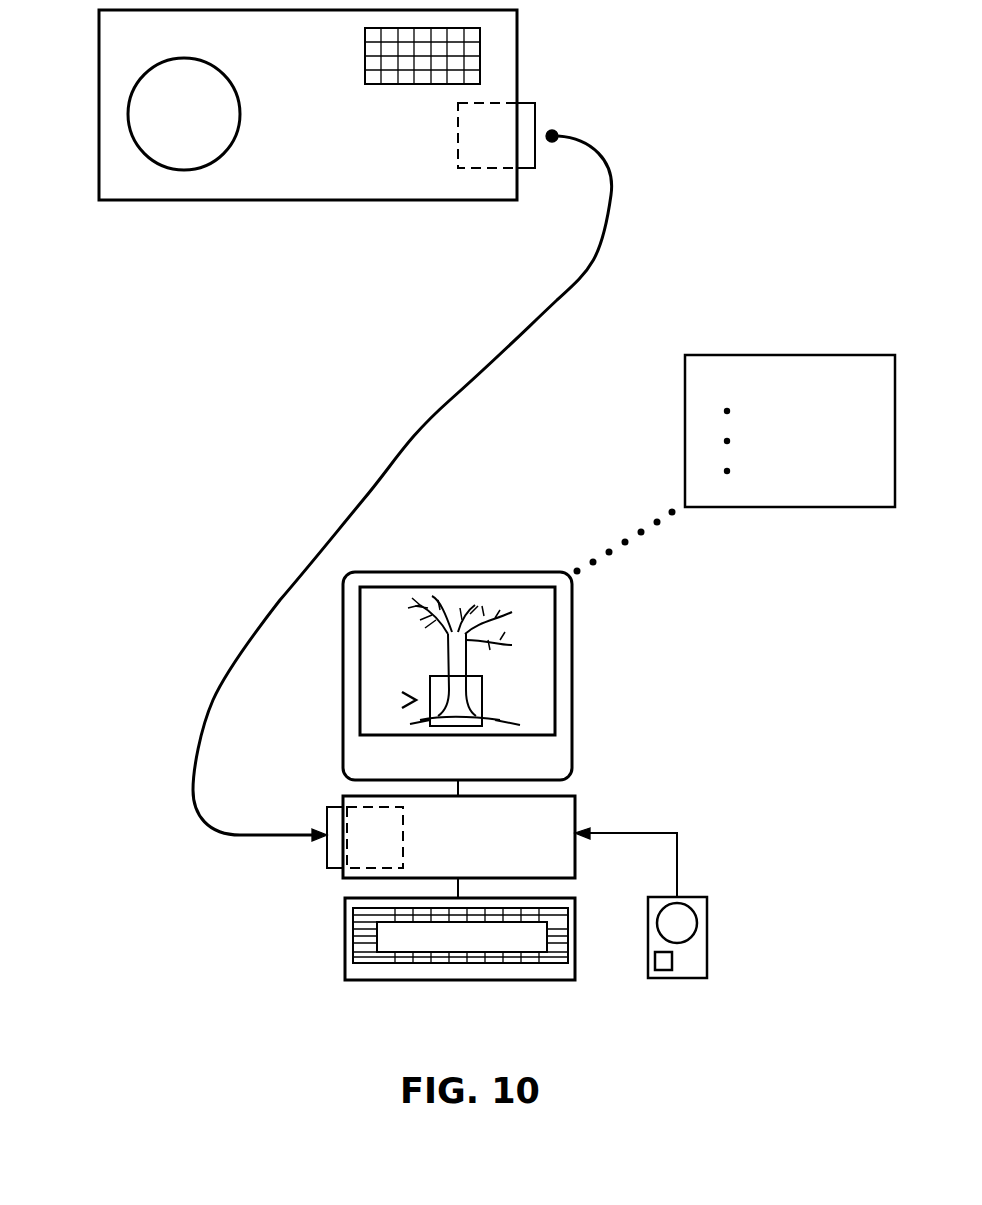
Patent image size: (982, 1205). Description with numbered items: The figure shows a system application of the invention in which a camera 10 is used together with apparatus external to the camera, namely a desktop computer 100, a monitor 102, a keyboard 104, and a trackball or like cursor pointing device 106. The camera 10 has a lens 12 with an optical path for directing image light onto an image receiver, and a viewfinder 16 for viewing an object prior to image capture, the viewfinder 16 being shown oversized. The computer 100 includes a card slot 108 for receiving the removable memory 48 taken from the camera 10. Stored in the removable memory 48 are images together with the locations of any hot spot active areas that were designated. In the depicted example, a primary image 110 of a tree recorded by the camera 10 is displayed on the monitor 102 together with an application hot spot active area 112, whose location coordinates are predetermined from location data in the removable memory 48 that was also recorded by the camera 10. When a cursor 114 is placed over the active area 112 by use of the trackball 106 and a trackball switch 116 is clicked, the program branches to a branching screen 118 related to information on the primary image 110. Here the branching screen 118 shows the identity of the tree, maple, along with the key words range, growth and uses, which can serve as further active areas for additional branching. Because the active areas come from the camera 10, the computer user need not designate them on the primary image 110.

The camera 10 is at (99, 152).
The lens 12 is at (240, 105).
The viewfinder 16 is at (480, 48).
The removable memory 48 is at (536, 115).
The computer 100 is at (578, 843).
The monitor 102 is at (410, 572).
The keyboard 104 is at (345, 940).
The trackball or like cursor pointing device 106 is at (708, 910).
The card slot 108 is at (360, 823).
The primary image 110 is at (513, 735).
The active area 112 is at (483, 705).
The cursor 114 is at (398, 700).
The trackball switch 116 is at (672, 962).
The branching screen 118 is at (766, 355).